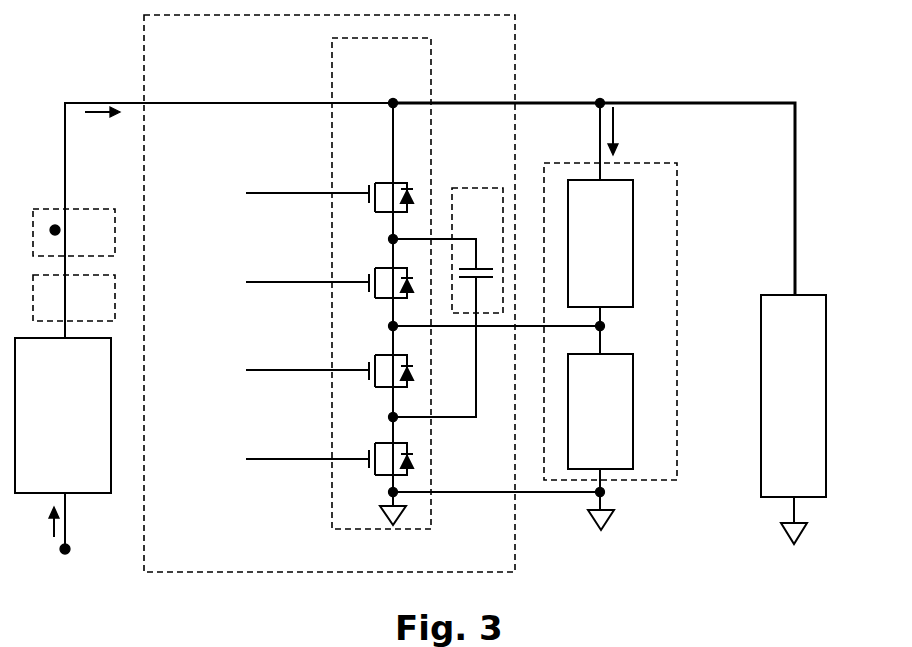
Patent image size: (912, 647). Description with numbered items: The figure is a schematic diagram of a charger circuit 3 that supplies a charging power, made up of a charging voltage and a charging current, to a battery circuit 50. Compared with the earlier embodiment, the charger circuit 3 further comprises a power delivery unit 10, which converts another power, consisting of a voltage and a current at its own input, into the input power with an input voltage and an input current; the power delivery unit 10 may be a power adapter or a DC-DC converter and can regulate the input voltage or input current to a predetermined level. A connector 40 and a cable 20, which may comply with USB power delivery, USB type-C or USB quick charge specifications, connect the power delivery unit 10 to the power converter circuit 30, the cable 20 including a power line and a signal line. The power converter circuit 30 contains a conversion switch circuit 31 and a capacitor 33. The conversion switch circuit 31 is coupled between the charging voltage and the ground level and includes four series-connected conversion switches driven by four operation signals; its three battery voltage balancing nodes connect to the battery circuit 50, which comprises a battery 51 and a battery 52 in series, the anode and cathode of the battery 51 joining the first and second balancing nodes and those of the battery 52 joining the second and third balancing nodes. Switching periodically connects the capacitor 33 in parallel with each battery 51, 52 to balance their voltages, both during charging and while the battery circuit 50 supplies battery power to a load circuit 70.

The charger circuit 3 is at (102, 33).
The power delivery unit 10 is at (74, 480).
The cable 20 is at (101, 310).
The power converter circuit 30 is at (496, 565).
The conversion switch circuit 31 is at (416, 77).
The capacitor 33 is at (488, 223).
The connector 40 is at (101, 243).
The battery circuit 50 is at (667, 470).
The battery 51 is at (611, 283).
The battery 52 is at (611, 452).
The load circuit 70 is at (783, 483).